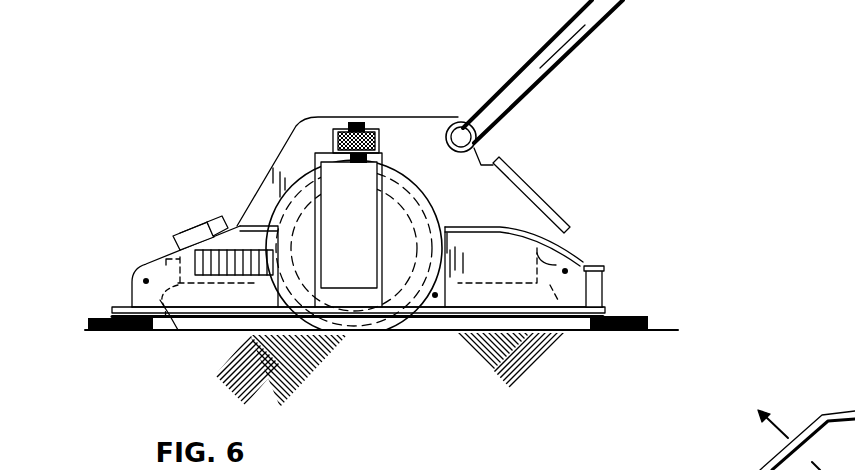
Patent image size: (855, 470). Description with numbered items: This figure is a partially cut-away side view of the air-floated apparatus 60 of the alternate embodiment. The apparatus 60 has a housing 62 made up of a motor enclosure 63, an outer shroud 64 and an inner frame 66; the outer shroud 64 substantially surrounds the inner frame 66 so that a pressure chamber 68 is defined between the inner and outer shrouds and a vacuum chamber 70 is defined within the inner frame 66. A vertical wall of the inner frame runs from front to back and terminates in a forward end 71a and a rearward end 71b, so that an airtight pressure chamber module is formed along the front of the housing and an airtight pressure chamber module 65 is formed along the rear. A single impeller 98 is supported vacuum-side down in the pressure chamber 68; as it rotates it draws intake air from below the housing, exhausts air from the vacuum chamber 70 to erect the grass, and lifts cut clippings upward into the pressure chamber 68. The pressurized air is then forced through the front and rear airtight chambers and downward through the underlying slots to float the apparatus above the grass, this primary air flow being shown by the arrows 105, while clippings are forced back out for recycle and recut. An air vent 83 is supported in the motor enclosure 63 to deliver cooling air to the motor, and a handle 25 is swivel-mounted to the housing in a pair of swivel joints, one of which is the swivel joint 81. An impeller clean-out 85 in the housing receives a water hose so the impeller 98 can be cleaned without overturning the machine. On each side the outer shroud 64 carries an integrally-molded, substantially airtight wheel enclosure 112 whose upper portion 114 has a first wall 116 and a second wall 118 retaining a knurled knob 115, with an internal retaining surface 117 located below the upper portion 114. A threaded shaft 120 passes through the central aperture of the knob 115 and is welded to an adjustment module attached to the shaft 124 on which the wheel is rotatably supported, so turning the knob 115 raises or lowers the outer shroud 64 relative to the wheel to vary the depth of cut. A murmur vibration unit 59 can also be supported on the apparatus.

The handle 25 is at (583, 40).
The murmur vibration unit 59 is at (602, 288).
The air-floated apparatus 60 is at (162, 121).
The housing 62 is at (262, 181).
The motor enclosure 63 is at (145, 281).
The outer shroud 64 is at (130, 290).
The airtight pressure chamber module 65 is at (566, 271).
The inner frame 66 is at (160, 303).
The pressure chamber 68 is at (518, 252).
The vacuum chamber 70 is at (540, 292).
The forward end 71a is at (118, 234).
The rearward end 71b is at (573, 236).
The swivel joint 81 is at (449, 146).
The air vent 83 is at (528, 198).
The impeller clean-out 85 is at (196, 224).
The impeller 98 is at (236, 240).
The arrows 105 is at (153, 338).
The wheel enclosure 112 is at (436, 295).
The upper portion 114 is at (389, 158).
The knurled knob 115 is at (293, 133).
The first wall 116 is at (333, 140).
The internal retaining surface 117 is at (378, 131).
The second wall 118 is at (380, 147).
The threaded shaft 120 is at (353, 124).
The shaft 124 is at (370, 248).